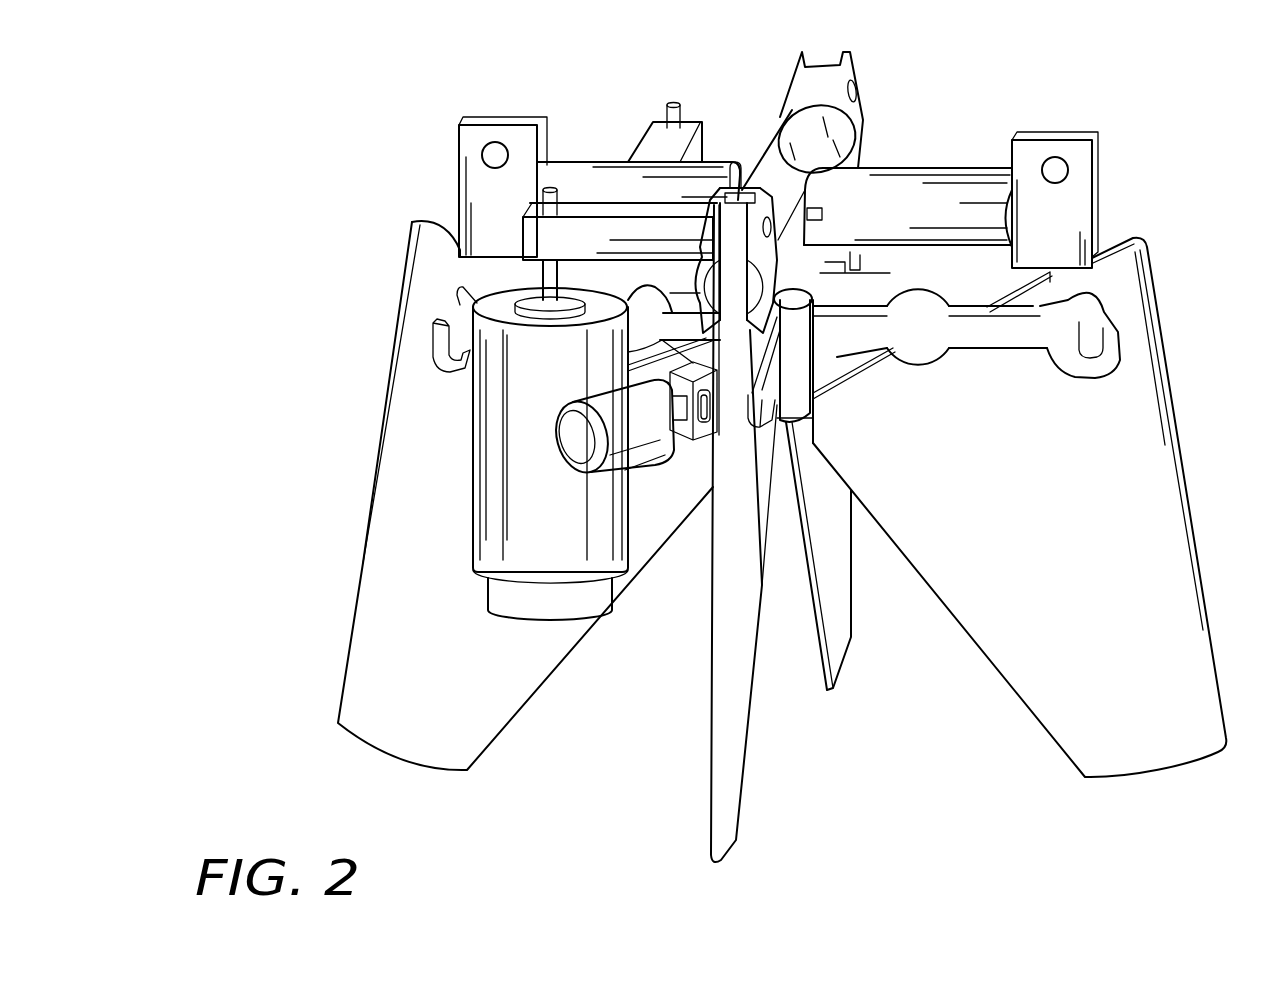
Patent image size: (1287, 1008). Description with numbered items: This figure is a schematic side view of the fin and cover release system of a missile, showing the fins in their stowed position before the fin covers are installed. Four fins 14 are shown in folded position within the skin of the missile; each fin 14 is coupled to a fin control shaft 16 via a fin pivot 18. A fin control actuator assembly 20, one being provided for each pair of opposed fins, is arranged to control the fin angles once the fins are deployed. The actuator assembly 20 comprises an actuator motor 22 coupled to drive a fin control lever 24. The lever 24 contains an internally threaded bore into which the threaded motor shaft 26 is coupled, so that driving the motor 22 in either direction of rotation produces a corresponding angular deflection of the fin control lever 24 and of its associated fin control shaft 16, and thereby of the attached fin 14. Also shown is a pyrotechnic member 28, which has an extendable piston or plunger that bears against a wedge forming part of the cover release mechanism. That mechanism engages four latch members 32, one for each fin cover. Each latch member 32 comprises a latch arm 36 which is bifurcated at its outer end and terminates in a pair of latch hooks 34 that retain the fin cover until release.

The fin 14 is at (360, 634).
The fin control shaft 16 is at (570, 175).
The fin pivot 18 is at (1083, 180).
The fin control actuator assembly 20 is at (455, 454).
The actuator motor 22 is at (552, 577).
The fin control lever 24 is at (653, 132).
The threaded motor shaft 26 is at (547, 275).
The pyrotechnic member 28 is at (647, 443).
The latch member 32 is at (922, 395).
The latch hook 34 is at (1120, 355).
The latch arm 36 is at (972, 348).